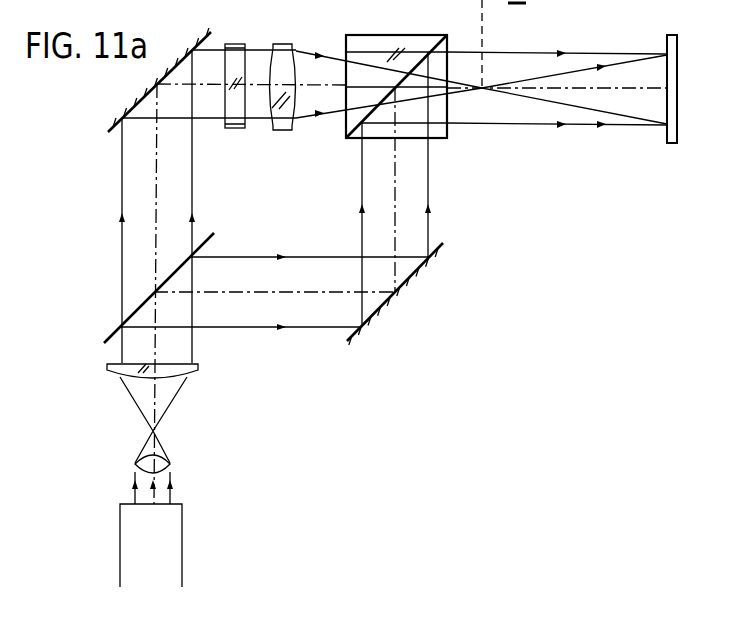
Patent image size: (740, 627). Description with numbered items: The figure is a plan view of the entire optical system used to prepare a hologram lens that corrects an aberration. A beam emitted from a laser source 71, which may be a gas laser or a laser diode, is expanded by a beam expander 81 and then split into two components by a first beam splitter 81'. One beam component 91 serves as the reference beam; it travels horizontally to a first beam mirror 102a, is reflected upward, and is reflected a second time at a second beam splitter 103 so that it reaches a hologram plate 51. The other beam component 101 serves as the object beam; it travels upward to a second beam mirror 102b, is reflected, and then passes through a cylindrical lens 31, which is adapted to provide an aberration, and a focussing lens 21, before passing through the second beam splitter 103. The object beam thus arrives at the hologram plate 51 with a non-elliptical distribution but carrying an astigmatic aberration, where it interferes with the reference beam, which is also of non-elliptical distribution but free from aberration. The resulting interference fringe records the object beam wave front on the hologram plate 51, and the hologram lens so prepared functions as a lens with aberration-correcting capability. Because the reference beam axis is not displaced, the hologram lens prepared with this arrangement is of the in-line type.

The cylindrical lens 31 is at (236, 44).
The focussing lens 21 is at (287, 43).
The second beam splitter 103 is at (396, 13).
The hologram plate 51 is at (689, 28).
The object beam component 101 is at (179, 181).
The second beam mirror 102b is at (137, 80).
The first beam mirror 102a is at (408, 288).
The first beam splitter 81' is at (147, 288).
The reference beam component 91 is at (257, 314).
The beam expander 81 is at (180, 418).
The laser source 71 is at (177, 532).